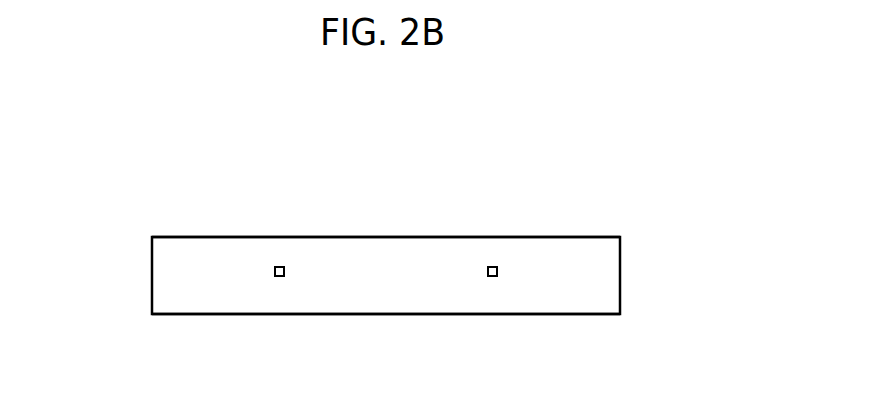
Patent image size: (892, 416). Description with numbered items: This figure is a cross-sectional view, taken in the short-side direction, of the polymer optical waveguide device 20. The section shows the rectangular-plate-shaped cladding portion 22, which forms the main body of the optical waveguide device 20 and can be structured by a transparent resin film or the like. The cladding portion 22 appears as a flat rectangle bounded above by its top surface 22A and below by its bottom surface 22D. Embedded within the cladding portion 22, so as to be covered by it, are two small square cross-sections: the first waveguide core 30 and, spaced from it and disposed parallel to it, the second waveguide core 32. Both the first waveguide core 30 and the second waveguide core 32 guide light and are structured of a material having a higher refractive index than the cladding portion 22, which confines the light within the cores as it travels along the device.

The optical waveguide device 20 is at (192, 137).
The cladding portion 22 is at (573, 237).
The top surface 22A is at (367, 237).
The bottom surface 22D is at (370, 315).
The first waveguide core 30 is at (278, 266).
The second waveguide core 32 is at (492, 266).